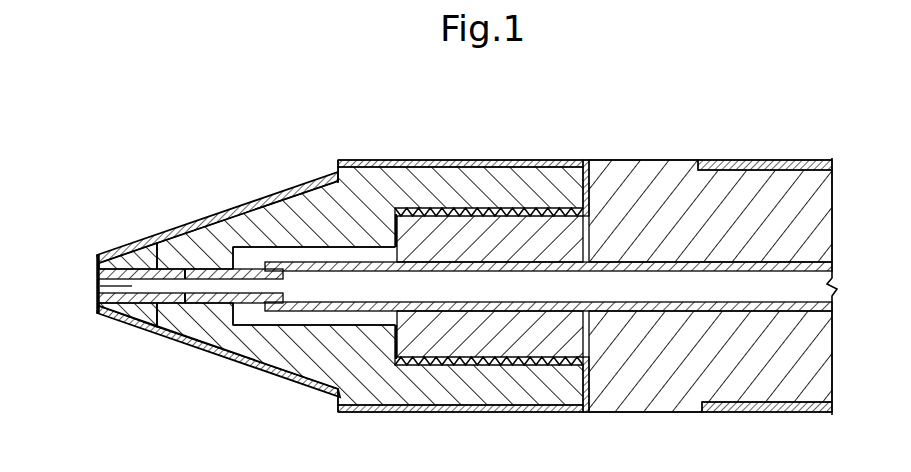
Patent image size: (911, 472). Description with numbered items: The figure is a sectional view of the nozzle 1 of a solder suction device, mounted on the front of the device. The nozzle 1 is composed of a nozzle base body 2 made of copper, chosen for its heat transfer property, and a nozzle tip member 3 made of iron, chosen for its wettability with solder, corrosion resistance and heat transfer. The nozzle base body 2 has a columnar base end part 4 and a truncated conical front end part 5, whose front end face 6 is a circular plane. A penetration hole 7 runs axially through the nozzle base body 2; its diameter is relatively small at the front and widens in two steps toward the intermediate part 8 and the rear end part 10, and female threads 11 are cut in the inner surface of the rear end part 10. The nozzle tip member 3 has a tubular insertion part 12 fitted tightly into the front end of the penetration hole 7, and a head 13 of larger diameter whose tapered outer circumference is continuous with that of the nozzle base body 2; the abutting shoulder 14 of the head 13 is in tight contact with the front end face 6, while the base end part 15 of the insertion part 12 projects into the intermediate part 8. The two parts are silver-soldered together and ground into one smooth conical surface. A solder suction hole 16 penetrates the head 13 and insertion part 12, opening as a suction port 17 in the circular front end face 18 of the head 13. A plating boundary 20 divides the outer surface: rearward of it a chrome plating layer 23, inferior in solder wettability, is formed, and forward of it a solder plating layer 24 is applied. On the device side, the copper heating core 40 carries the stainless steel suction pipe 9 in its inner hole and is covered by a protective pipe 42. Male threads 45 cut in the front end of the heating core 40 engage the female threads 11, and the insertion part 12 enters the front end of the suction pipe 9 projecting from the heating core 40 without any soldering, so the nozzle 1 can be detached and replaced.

The nozzle 1 is at (190, 158).
The nozzle base body 2 is at (373, 159).
The nozzle tip member 3 is at (110, 247).
The base end part 4 is at (443, 168).
The front end part 5 is at (277, 205).
The front end face 6 is at (146, 266).
The penetration hole 7 is at (200, 266).
The intermediate part 8 is at (250, 252).
The suction pipe 9 is at (335, 262).
The rear end part 10 is at (510, 210).
The female threads 11 is at (560, 210).
The insertion part 12 is at (225, 303).
The head 13 is at (146, 316).
The abutting shoulder 14 is at (170, 320).
The base end part 15 is at (287, 310).
The solder suction hole 16 is at (128, 296).
The suction port 17 is at (100, 287).
The front end face 18 is at (97, 262).
The plating boundary 20 is at (128, 242).
The chrome plating layer 23 is at (202, 352).
The solder plating layer 24 is at (100, 312).
The heating core 40 is at (645, 165).
The protective pipe 42 is at (762, 162).
The male threads 45 is at (515, 362).